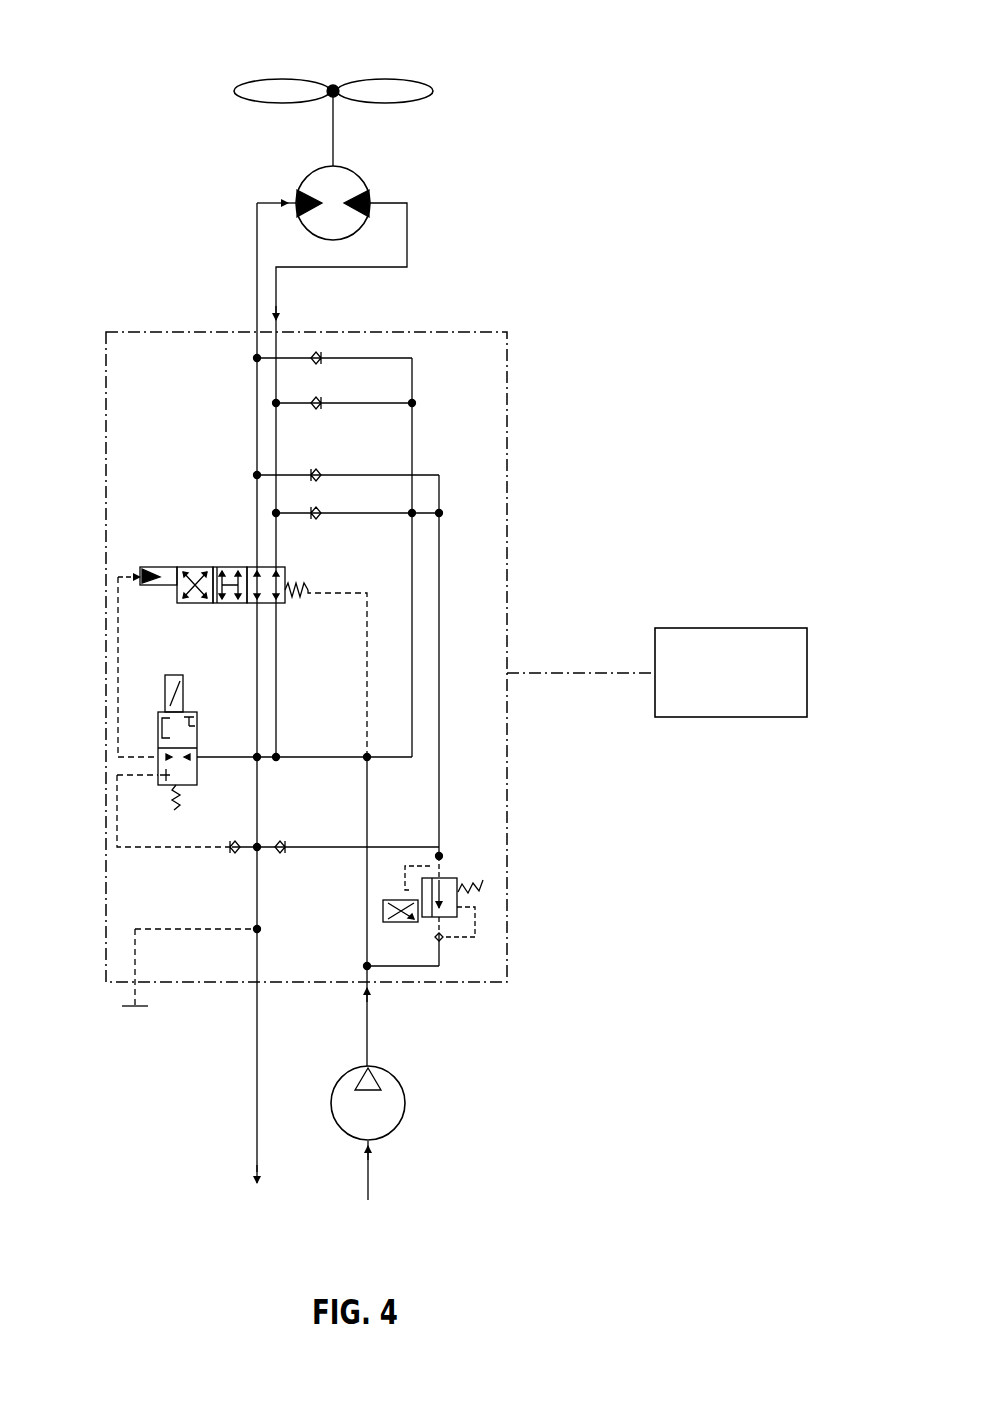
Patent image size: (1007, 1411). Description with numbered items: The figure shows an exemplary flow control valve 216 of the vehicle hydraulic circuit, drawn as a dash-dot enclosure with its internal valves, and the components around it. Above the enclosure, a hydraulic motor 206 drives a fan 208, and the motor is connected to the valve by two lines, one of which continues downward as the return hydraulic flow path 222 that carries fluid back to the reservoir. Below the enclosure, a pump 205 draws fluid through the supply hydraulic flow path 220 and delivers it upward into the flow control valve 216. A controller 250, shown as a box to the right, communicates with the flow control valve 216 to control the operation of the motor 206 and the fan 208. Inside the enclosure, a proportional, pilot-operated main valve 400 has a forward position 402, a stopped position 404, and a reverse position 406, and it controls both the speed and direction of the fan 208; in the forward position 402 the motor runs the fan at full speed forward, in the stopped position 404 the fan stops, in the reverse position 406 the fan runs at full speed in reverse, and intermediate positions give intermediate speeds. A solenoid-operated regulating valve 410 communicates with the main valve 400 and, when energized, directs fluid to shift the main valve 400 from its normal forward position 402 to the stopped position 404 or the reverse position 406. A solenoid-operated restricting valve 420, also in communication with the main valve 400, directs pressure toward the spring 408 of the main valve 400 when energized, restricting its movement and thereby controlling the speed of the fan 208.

The fan 208 is at (248, 80).
The hydraulic motor 206 is at (313, 172).
The main valve 400 is at (248, 555).
The forward position 402 is at (281, 568).
The stopped position 404 is at (232, 604).
The reverse position 406 is at (193, 604).
The spring 408 is at (309, 590).
The regulating valve 410 is at (208, 770).
The controller 250 is at (657, 672).
The flow control valve 216 is at (510, 795).
The restricting valve 420 is at (487, 908).
The return hydraulic flow path 222 is at (257, 1073).
The pump 205 is at (405, 1106).
The supply hydraulic flow path 220 is at (369, 1176).